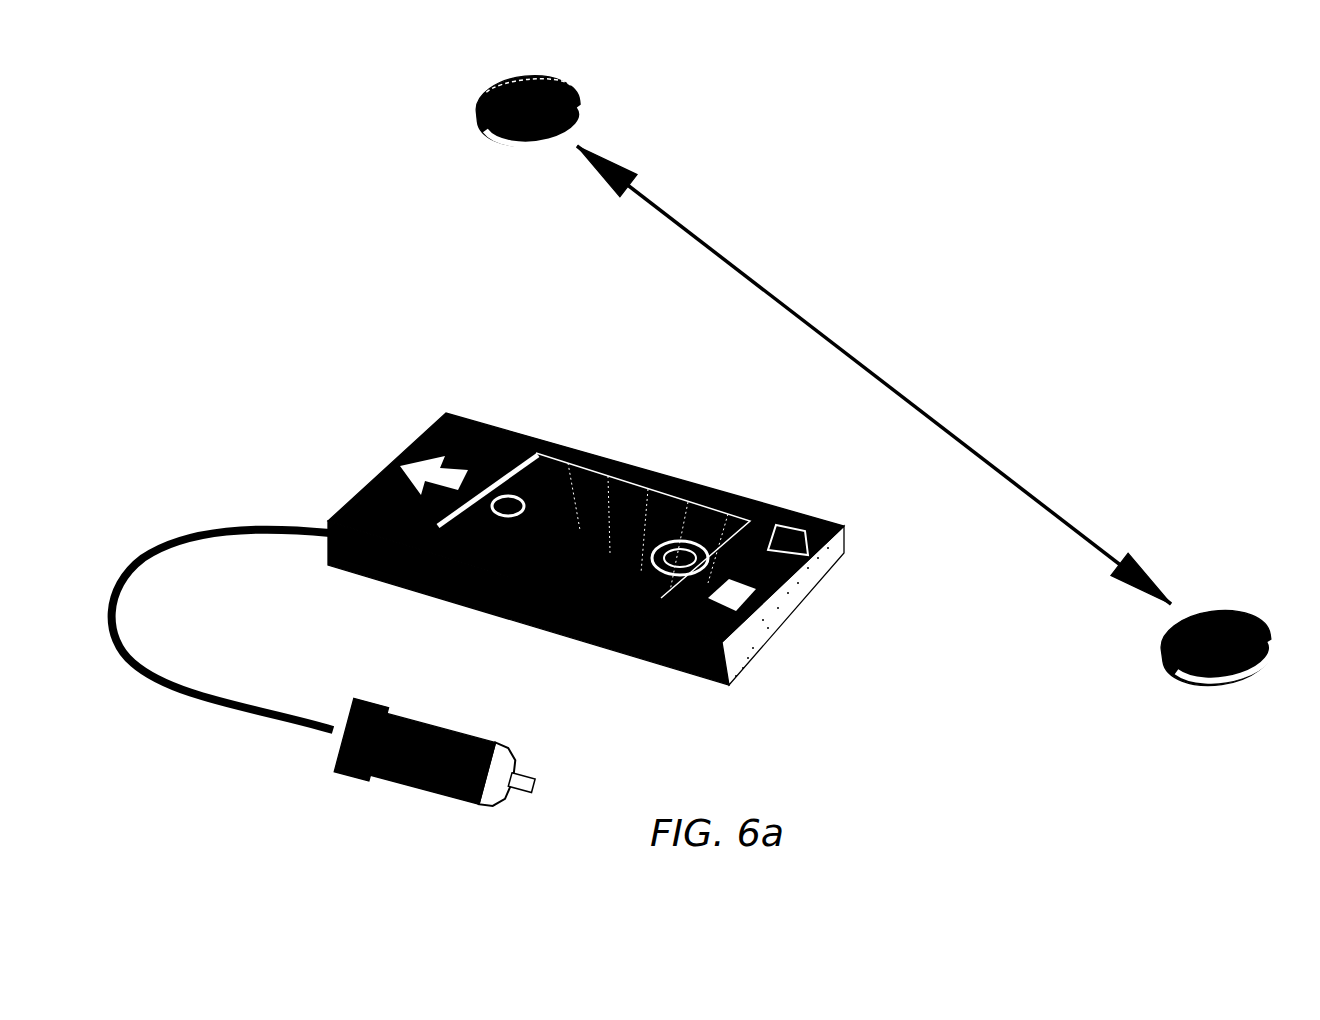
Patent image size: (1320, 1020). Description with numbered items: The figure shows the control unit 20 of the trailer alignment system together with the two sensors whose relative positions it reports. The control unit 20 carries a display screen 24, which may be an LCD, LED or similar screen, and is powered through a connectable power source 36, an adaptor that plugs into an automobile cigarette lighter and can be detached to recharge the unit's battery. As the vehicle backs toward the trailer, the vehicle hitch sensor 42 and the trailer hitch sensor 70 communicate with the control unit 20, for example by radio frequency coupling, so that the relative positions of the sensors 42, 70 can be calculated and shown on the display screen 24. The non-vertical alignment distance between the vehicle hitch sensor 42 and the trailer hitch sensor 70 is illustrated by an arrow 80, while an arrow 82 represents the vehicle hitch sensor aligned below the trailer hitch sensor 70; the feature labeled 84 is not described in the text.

The control unit 20 is at (597, 520).
The display screen 24 is at (635, 458).
The connectable power source 36 is at (367, 765).
The vehicle hitch sensor 42 is at (1218, 606).
The trailer hitch sensor 70 is at (464, 103).
The arrow 80 is at (900, 380).
The arrow 82 is at (575, 634).
The recessed panel 84 is at (518, 428).